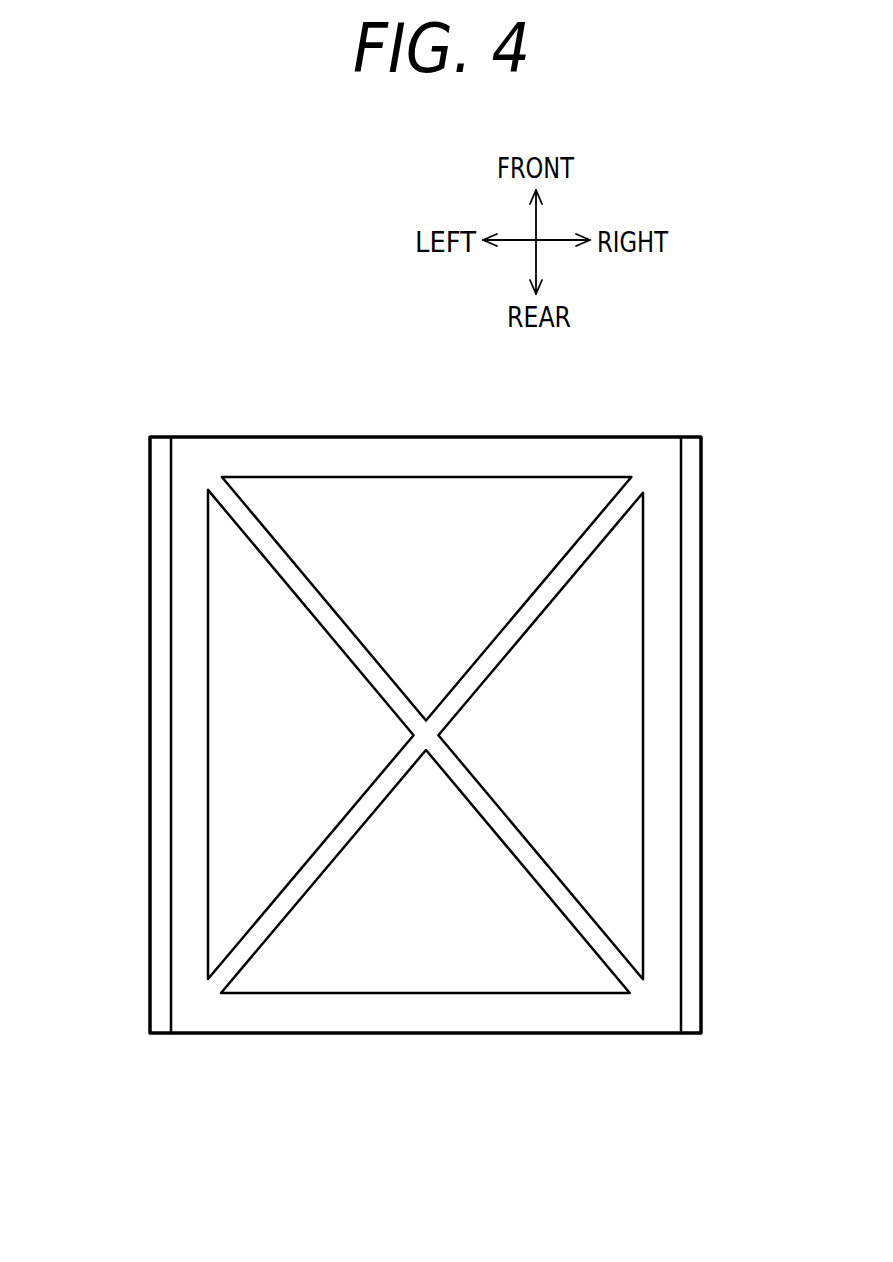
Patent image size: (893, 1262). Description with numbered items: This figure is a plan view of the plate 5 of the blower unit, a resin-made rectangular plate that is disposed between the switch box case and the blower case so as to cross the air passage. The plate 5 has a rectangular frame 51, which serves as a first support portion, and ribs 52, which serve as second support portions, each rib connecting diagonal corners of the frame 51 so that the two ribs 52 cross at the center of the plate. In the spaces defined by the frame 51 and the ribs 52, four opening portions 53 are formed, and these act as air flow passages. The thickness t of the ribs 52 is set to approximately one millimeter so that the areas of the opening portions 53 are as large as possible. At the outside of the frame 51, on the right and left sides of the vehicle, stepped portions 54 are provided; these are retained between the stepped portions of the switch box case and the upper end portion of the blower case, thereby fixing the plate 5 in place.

The plate 5 is at (136, 693).
The rectangular frame 51 is at (310, 457).
The ribs 52 is at (600, 532).
The opening portions 53 is at (580, 723).
The stepped portions 54 is at (690, 817).